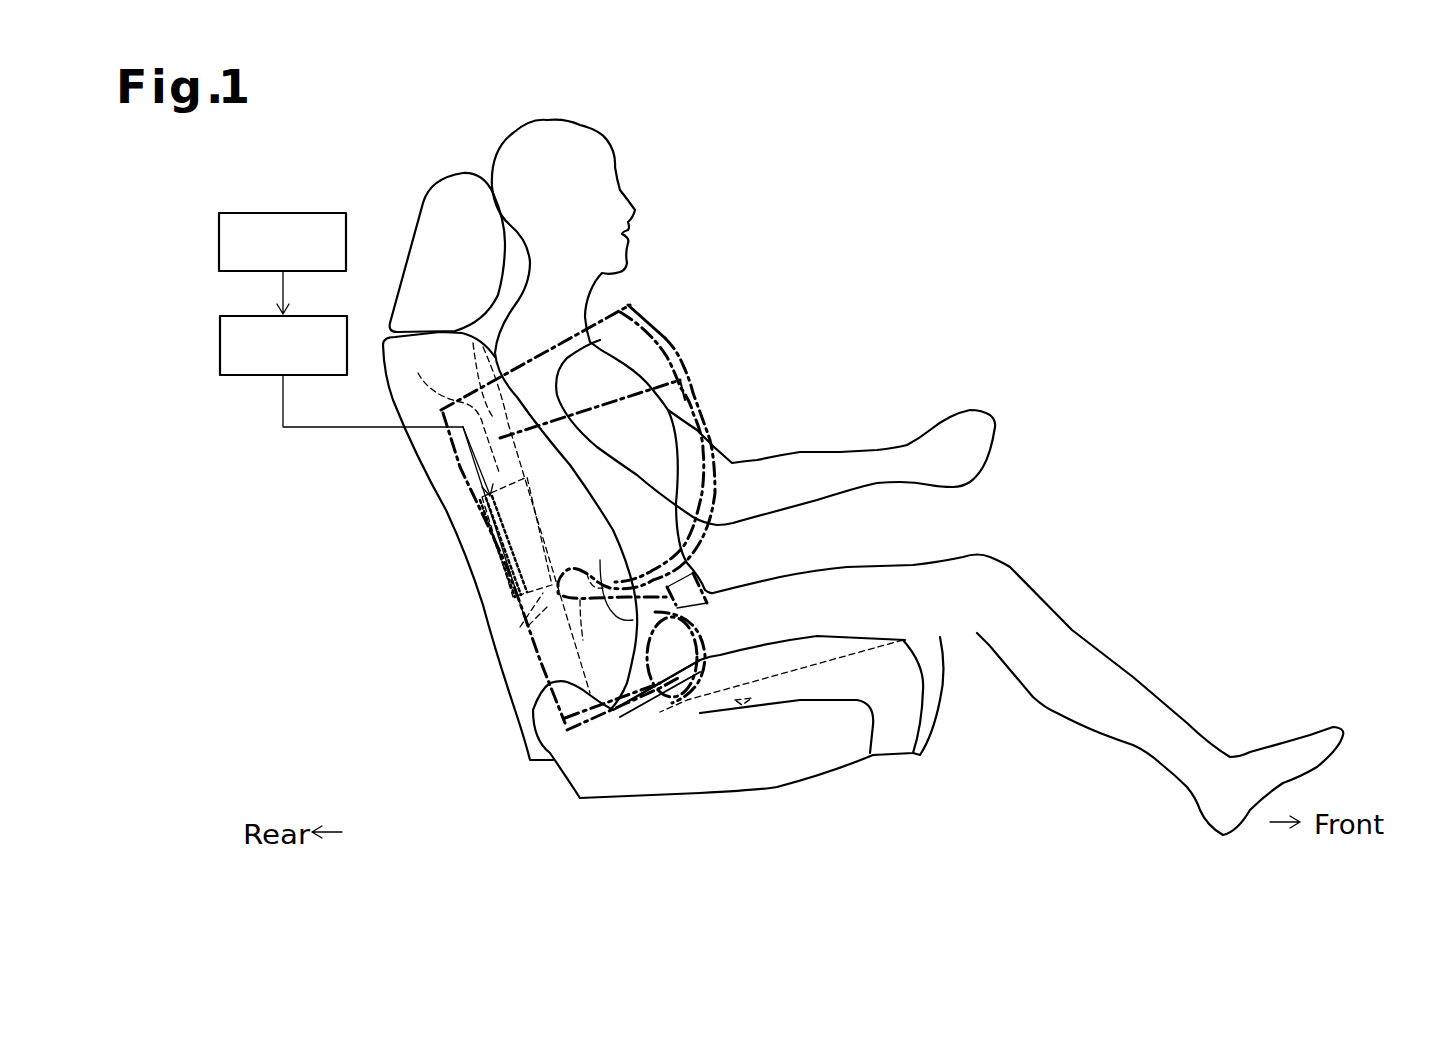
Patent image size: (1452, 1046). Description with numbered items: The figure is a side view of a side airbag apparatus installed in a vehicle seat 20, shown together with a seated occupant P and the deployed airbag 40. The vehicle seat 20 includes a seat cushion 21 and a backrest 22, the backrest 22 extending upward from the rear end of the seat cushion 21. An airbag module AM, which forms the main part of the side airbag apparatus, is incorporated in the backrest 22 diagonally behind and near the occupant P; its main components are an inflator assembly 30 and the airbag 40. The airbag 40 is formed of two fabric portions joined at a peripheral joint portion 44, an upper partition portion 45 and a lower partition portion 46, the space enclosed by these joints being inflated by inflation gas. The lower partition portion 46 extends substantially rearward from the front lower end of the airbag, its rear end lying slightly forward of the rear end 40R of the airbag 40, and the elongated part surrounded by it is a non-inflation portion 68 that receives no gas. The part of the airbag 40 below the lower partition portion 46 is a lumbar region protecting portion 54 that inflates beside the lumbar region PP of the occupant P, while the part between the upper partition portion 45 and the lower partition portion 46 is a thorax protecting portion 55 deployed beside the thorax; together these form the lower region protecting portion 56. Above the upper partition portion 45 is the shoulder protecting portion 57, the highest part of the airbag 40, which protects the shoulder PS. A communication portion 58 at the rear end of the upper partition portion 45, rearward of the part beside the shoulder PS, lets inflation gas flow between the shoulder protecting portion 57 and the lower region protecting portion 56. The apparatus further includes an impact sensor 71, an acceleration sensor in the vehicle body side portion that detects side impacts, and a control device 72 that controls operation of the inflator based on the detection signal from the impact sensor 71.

The vehicle seat 20 is at (498, 760).
The seat cushion 21 is at (930, 690).
The backrest 22 is at (455, 505).
The inflator assembly 30 is at (510, 542).
The airbag 40 is at (663, 340).
The rear end of the airbag 40R is at (450, 443).
The peripheral joint portion 44 is at (690, 380).
The upper partition portion 45 is at (602, 405).
The lower partition portion 46 is at (700, 573).
The lumbar region protecting portion 54 is at (656, 667).
The thorax protecting portion 55 is at (658, 447).
The lower region protecting portion 56 is at (685, 611).
The shoulder protecting portion 57 is at (591, 374).
The communication portion 58 is at (452, 408).
The non-inflation portion 68 is at (607, 580).
The impact sensor 71 is at (219, 232).
The control device 72 is at (219, 342).
The occupant P is at (612, 140).
The shoulder PS is at (558, 380).
The lumbar region PP is at (637, 673).
The airbag module AM is at (517, 575).